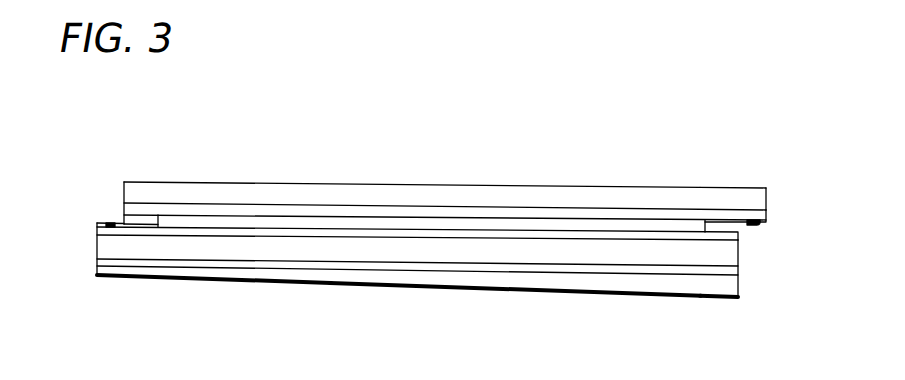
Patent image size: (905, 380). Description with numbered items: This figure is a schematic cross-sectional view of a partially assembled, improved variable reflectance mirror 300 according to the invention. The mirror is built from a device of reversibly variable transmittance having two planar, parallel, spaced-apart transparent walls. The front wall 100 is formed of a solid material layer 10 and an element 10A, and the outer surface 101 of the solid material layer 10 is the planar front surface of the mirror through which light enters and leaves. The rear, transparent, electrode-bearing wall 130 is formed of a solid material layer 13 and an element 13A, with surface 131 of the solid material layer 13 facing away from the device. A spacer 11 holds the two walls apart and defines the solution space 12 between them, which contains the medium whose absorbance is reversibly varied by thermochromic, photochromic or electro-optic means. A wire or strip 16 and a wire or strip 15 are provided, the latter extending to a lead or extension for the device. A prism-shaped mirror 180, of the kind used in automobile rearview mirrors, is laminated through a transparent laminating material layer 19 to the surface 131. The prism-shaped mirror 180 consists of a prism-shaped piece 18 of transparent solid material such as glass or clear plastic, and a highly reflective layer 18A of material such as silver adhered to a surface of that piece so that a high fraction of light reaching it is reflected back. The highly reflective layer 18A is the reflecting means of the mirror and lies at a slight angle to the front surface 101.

The variable reflectance mirror 300 is at (446, 176).
The wall 100 is at (111, 185).
The surface 101 is at (768, 190).
The solid material layer 10 is at (770, 202).
The element of wall 100 10A is at (768, 217).
The solution space 12 is at (193, 222).
The spacer 11 is at (123, 218).
The wire or strip 15 is at (750, 225).
The wire or strip 16 is at (97, 217).
The wall 130 is at (97, 245).
The solid material layer 13 is at (740, 262).
The element of wall 130 13A is at (740, 243).
The surface 131 is at (740, 269).
The transparent laminating material layer 19 is at (739, 273).
The prism-shaped piece 18 is at (510, 283).
The prism-shaped mirror 180 is at (310, 300).
The highly reflective layer 18A is at (738, 299).